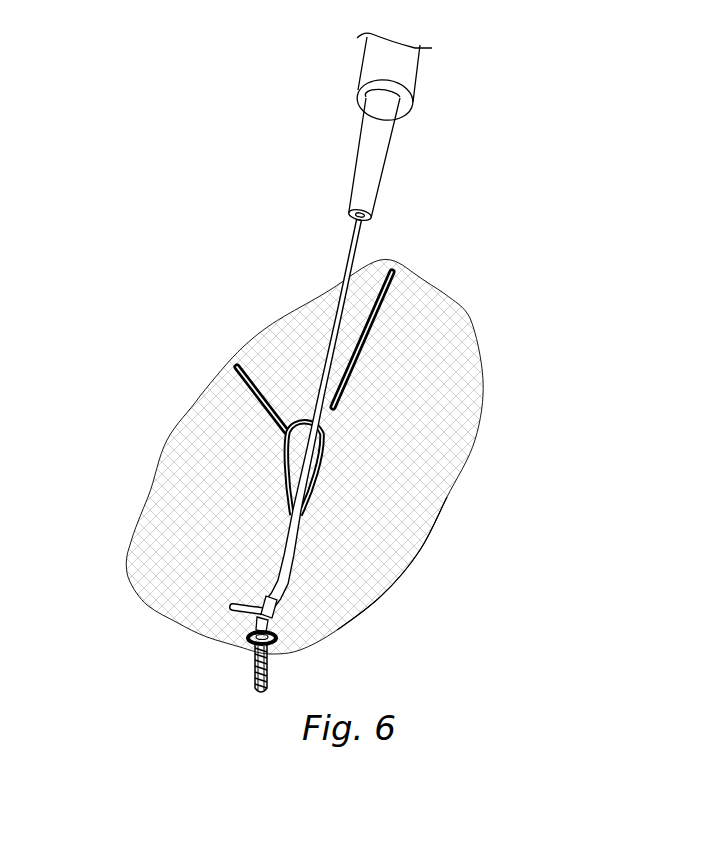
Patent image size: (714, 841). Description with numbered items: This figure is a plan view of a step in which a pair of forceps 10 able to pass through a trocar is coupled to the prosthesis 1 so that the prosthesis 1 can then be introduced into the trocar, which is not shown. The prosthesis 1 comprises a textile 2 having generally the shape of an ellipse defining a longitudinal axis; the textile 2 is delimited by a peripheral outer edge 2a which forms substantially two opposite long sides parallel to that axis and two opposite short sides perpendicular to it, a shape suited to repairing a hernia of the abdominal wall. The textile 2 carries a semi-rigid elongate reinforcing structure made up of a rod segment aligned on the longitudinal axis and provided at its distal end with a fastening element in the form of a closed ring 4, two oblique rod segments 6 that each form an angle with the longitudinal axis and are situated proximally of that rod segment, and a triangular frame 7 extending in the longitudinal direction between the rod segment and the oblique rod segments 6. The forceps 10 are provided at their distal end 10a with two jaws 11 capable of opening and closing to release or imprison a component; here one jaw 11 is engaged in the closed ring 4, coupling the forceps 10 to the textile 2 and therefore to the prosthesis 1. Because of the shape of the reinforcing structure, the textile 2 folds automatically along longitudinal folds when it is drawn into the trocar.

The prosthesis 1 is at (340, 453).
The textile 2 is at (427, 451).
The peripheral outer edge 2a is at (422, 555).
The closed ring 4 is at (247, 637).
The oblique rod segments 6 is at (250, 385).
The triangular frame 7 is at (282, 458).
The forceps 10 is at (268, 575).
The distal end 10a is at (285, 612).
The jaw 11 is at (272, 665).